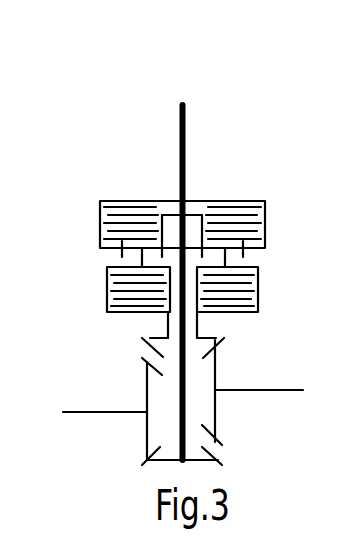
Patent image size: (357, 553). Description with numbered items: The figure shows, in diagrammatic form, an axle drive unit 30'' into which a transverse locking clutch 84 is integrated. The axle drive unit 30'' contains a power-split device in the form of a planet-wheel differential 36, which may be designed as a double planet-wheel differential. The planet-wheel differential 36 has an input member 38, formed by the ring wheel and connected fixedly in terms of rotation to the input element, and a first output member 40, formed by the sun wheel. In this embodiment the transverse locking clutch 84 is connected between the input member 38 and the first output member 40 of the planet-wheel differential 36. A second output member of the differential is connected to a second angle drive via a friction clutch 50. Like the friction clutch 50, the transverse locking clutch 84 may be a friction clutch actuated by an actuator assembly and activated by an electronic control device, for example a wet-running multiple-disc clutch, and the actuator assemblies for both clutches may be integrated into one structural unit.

The axle drive unit 30'' is at (195, 264).
The planet-wheel differential 36 is at (95, 261).
The input member 38 is at (99, 222).
The first output member 40 is at (167, 216).
The friction clutch 50 is at (259, 293).
The transverse locking clutch 84 is at (243, 213).